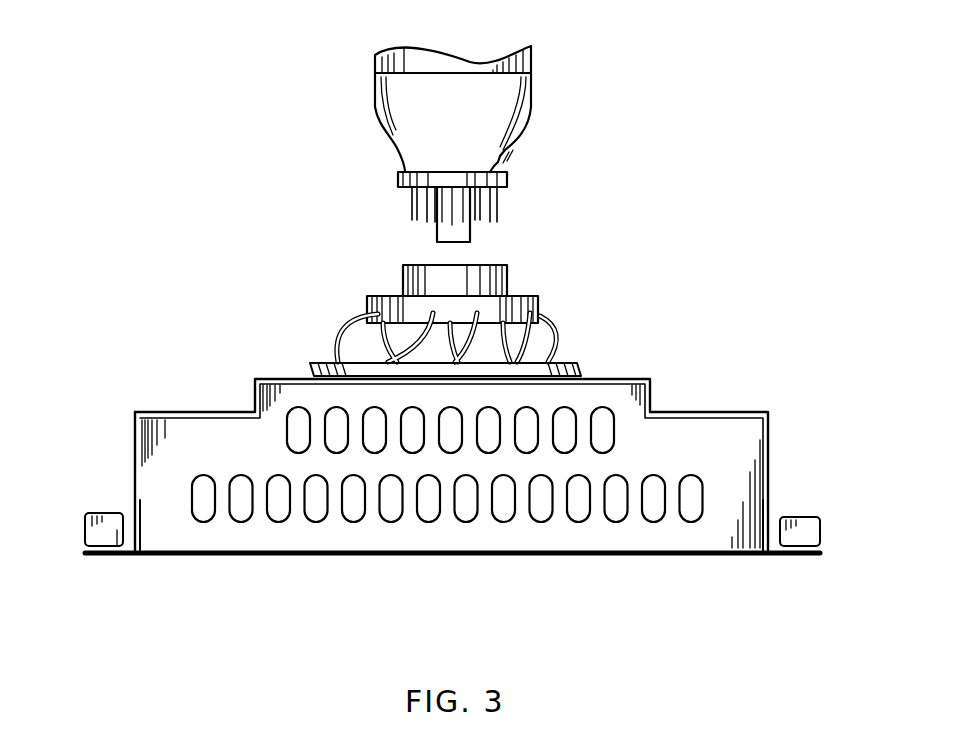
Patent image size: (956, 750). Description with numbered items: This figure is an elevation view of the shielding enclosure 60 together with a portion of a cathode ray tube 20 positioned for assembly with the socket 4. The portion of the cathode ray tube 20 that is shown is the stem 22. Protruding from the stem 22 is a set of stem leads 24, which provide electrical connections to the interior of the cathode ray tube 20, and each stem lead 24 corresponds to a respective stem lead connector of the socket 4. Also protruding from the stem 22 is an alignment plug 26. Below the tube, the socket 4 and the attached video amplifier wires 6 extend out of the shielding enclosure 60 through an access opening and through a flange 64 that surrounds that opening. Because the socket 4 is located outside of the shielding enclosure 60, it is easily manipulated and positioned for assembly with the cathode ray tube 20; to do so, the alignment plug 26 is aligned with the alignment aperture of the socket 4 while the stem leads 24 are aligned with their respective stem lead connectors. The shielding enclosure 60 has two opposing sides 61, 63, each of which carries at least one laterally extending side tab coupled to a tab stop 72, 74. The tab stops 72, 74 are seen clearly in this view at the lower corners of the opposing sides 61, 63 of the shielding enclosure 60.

The cathode ray tube 20 is at (481, 152).
The stem 22 is at (531, 126).
The stem leads 24 is at (412, 212).
The alignment plug 26 is at (470, 232).
The socket 4 is at (507, 283).
The video amplifier wires 6 is at (343, 340).
The flange 64 is at (578, 366).
The shielding enclosure 60 is at (451, 438).
The opposing side 61 is at (133, 544).
The opposing side 63 is at (772, 546).
The tab stop 72 is at (97, 532).
The tab stop 74 is at (808, 536).